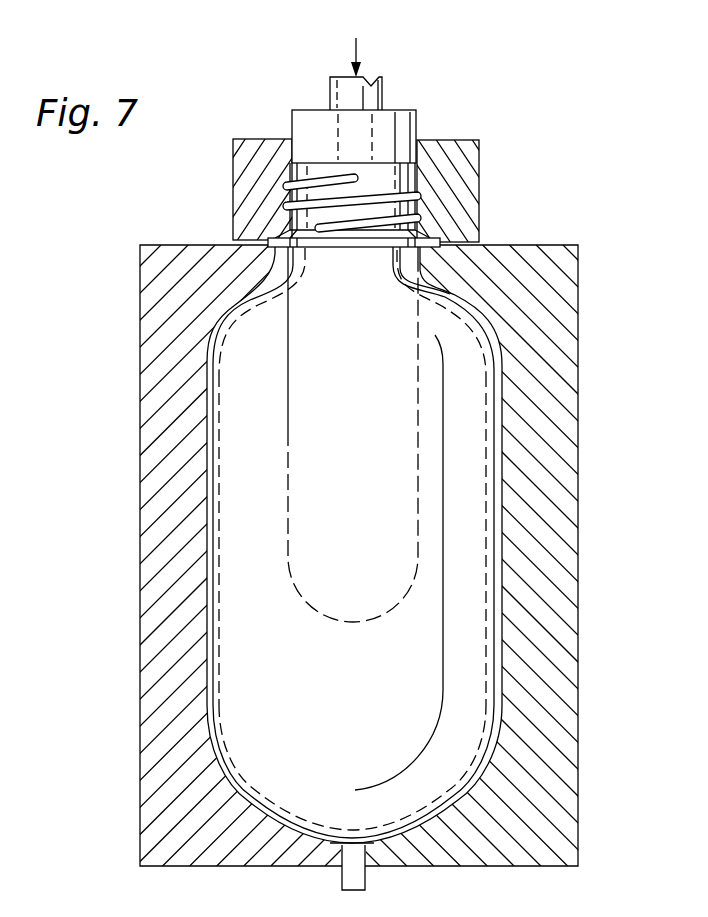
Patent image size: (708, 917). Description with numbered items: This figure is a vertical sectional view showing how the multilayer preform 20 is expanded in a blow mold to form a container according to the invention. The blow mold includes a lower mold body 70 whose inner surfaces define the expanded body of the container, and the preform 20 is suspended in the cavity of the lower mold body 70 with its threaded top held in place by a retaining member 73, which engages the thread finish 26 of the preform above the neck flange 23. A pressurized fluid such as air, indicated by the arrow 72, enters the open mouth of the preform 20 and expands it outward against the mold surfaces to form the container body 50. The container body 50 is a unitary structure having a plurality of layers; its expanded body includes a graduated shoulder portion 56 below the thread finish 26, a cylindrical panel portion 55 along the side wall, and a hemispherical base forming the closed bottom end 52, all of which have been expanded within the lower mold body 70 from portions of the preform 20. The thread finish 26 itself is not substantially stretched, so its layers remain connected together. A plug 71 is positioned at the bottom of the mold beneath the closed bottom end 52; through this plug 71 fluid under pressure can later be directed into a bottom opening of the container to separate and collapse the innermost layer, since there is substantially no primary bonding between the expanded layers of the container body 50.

The multilayer preform 20 is at (283, 434).
The neck flange 23 is at (445, 240).
The thread finish 26 is at (420, 190).
The container body 50 is at (200, 548).
The closed bottom end (hemispherical base) 52 is at (250, 812).
The cylindrical panel portion 55 is at (205, 670).
The graduated shoulder portion 56 is at (239, 295).
The lower mold body 70 is at (580, 332).
The plug 71 is at (366, 880).
The pressurized fluid (air) arrow 72 is at (359, 45).
The retaining member 73 is at (468, 137).